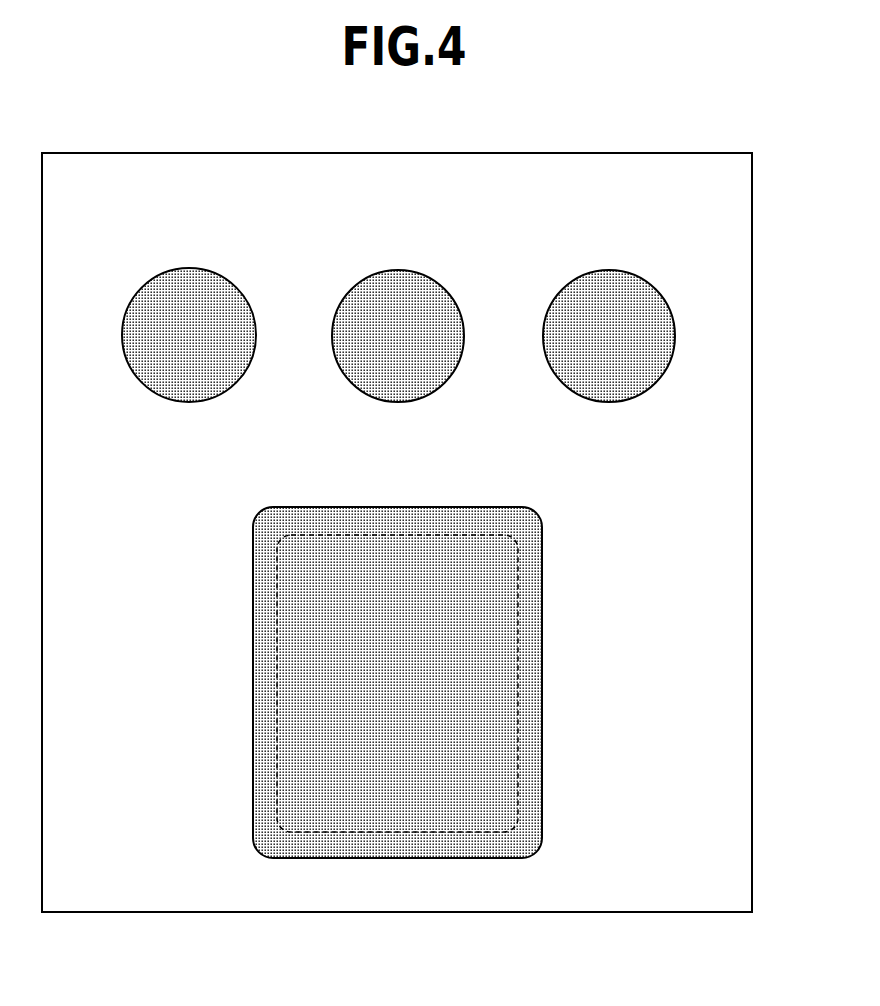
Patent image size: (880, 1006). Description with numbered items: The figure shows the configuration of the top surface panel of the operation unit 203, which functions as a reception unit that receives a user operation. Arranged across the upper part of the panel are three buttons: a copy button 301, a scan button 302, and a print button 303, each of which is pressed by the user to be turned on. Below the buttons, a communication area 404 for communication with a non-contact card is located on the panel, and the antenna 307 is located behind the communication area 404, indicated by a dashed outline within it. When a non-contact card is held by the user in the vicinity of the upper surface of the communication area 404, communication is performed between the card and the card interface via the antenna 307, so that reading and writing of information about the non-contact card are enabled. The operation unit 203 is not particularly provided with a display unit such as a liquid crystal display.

The operation unit 203 is at (571, 153).
The copy button 301 is at (189, 268).
The scan button 302 is at (398, 270).
The print button 303 is at (609, 270).
The communication area 404 is at (543, 593).
The antenna 307 is at (518, 735).